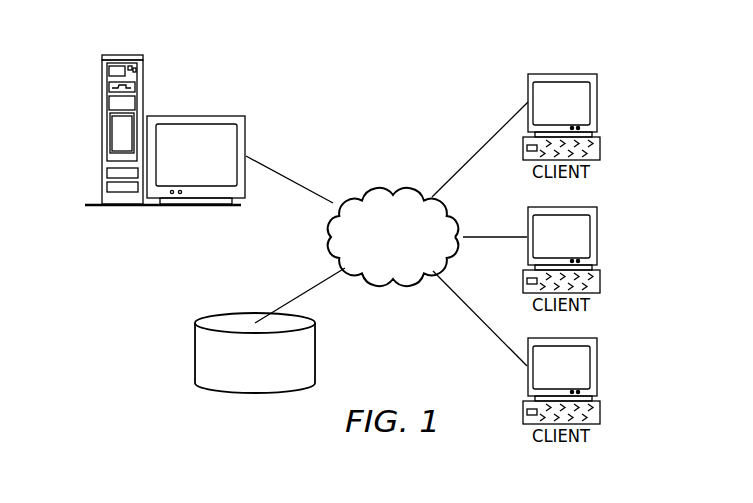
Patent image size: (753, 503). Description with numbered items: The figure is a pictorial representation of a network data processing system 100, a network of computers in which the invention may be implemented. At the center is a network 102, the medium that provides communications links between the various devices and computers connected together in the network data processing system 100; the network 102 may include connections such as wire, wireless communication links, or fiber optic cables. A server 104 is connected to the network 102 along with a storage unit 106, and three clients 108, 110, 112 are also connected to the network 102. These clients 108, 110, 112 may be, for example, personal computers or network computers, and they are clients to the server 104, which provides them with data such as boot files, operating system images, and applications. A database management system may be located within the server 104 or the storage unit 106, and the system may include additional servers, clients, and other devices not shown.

The network data processing system 100 is at (442, 83).
The network 102 is at (366, 188).
The server 104 is at (103, 131).
The storage unit 106 is at (195, 352).
The client 108 is at (597, 104).
The client 110 is at (597, 237).
The client 112 is at (597, 368).